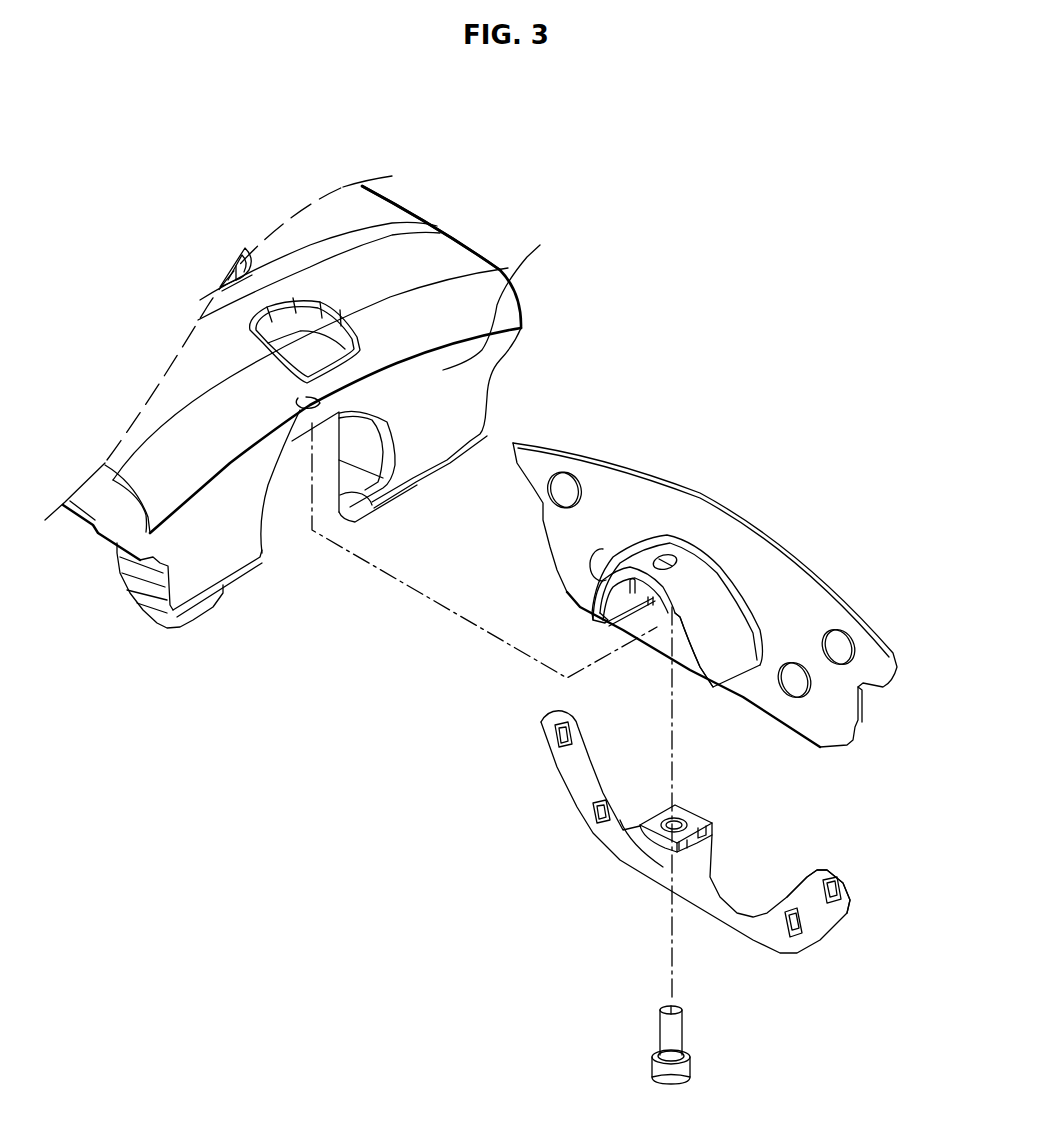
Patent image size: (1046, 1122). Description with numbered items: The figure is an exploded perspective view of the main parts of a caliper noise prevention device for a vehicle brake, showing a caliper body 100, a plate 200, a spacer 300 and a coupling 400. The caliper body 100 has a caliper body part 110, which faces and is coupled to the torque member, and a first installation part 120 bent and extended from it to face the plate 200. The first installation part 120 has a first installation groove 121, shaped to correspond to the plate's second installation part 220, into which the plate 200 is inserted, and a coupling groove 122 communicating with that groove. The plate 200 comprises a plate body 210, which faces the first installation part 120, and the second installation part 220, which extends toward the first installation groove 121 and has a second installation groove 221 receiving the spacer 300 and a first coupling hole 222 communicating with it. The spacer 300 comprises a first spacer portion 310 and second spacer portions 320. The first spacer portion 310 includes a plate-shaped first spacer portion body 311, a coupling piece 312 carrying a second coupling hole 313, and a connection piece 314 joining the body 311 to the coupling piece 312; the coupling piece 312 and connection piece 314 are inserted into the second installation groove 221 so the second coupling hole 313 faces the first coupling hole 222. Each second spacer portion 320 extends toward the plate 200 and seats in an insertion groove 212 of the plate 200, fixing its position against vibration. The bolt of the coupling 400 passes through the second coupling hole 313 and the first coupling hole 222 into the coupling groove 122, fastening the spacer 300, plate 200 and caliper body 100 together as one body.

The caliper body 100 is at (517, 145).
The caliper body part 110 is at (418, 250).
The first installation part 120 is at (515, 302).
The first installation groove 121 is at (360, 442).
The coupling groove 122 is at (302, 410).
The plate 200 is at (705, 589).
The plate body 210 is at (667, 507).
The insertion groove 212 is at (840, 643).
The second installation part 220 is at (710, 580).
The second installation groove 221 is at (687, 632).
The first coupling hole 222 is at (658, 568).
The spacer 300 is at (733, 832).
The first spacer portion 310 is at (687, 832).
The first spacer portion body 311 is at (803, 888).
The coupling piece 312 is at (692, 817).
The second coupling hole 313 is at (660, 807).
The connection piece 314 is at (700, 850).
The second spacer portion 320 is at (878, 886).
The coupling 400 is at (673, 1038).